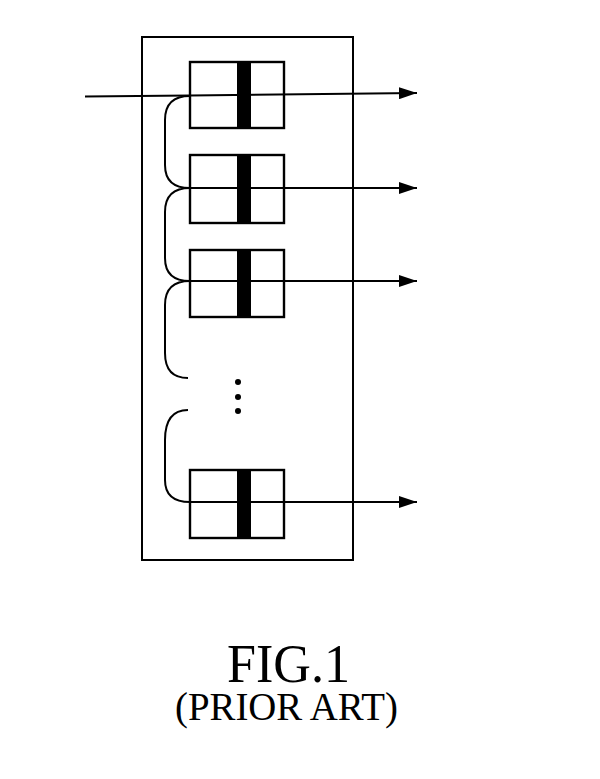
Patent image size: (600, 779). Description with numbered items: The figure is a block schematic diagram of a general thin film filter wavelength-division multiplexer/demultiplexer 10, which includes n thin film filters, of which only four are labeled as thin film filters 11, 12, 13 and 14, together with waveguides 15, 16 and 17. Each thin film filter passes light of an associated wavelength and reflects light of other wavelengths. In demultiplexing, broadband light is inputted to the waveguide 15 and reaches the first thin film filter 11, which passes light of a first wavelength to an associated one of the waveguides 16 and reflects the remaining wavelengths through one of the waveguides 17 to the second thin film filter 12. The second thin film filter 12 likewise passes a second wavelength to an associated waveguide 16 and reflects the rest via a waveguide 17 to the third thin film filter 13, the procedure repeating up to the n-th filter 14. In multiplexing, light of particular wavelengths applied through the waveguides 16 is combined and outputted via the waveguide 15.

The thin film filter wavelength-division multiplexer/demultiplexer 10 is at (488, 32).
The first thin film filter 11 is at (285, 73).
The second thin film filter 12 is at (285, 168).
The third thin film filter 13 is at (285, 262).
The thin film filter 14 is at (285, 484).
The waveguide 15 is at (100, 96).
The waveguides 16 is at (380, 91).
The waveguides 17 is at (165, 140).